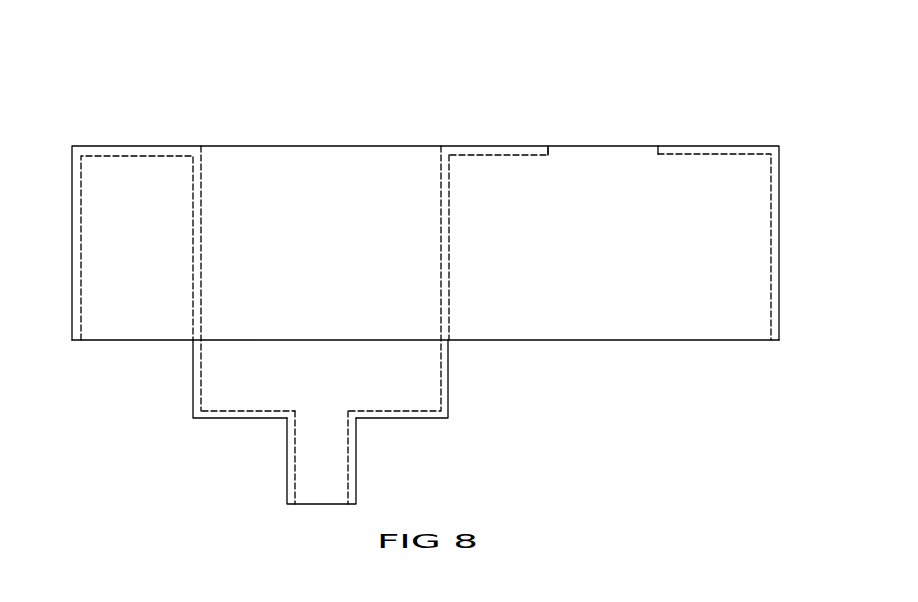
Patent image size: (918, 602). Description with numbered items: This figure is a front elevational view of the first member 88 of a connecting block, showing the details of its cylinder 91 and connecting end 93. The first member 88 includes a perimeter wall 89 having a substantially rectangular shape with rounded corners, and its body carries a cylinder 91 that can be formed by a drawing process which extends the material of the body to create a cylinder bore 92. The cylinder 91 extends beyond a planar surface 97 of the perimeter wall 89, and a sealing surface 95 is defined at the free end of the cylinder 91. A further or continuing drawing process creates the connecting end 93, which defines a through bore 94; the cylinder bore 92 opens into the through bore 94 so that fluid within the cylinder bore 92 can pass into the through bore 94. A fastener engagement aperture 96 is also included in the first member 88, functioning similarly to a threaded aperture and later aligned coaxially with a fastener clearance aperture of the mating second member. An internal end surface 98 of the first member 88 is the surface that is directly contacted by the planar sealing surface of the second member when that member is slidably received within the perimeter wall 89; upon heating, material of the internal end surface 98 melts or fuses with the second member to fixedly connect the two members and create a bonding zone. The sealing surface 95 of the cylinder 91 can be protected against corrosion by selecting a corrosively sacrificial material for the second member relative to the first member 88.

The first member 88 is at (756, 115).
The perimeter wall 89 is at (780, 243).
The cylinder 91 is at (197, 358).
The cylinder bore 92 is at (215, 393).
The connecting end 93 is at (287, 455).
The through bore 94 is at (322, 490).
The sealing surface 95 is at (410, 430).
The fastener engagement aperture 96 is at (648, 147).
The planar surface 97 is at (623, 347).
The internal end surface 98 is at (548, 185).